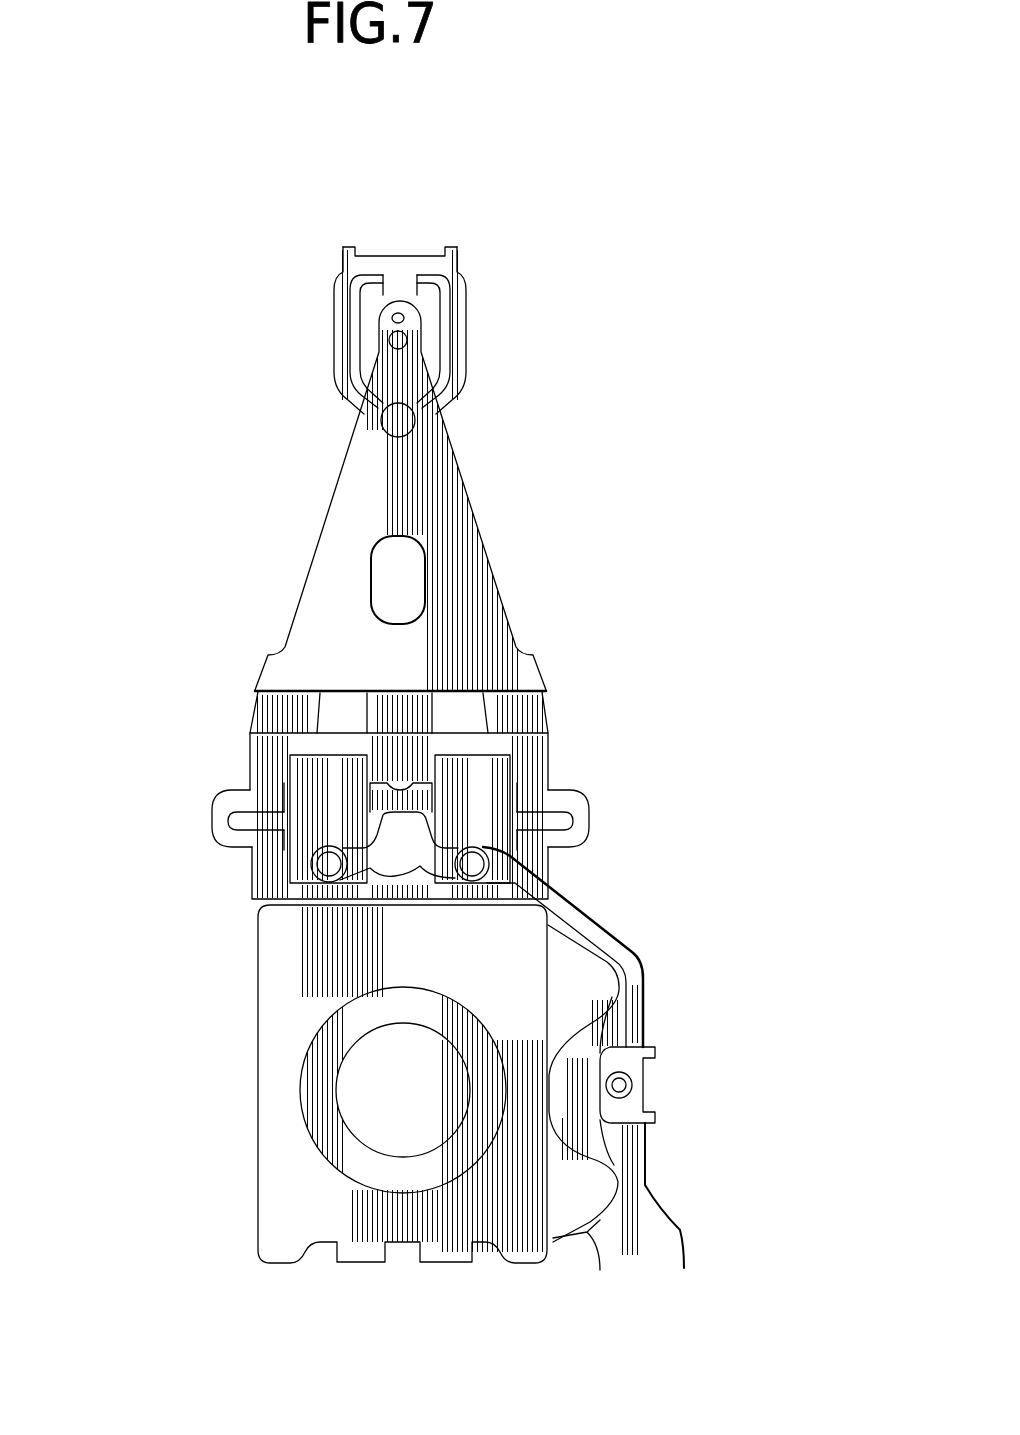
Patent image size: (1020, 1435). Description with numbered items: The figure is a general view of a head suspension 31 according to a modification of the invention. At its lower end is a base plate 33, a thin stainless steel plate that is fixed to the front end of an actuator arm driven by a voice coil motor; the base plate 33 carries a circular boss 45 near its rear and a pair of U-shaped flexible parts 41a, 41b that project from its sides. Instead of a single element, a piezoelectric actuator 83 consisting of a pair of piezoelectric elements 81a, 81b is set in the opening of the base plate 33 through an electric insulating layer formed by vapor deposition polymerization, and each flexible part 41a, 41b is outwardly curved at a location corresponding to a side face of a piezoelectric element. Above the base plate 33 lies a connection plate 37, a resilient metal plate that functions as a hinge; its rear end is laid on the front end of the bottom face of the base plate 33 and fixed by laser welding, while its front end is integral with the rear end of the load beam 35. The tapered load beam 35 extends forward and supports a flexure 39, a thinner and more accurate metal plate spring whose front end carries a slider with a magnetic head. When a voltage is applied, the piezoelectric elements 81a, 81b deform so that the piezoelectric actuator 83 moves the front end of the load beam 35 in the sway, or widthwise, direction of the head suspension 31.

The head suspension 31 is at (551, 239).
The base plate 33 is at (287, 1050).
The load beam 35 is at (455, 568).
The connection plate 37 is at (492, 686).
The flexure 39 is at (458, 333).
The flexible part 41a is at (217, 823).
The flexible part 41b is at (600, 822).
The circular boss 45 is at (333, 1127).
The piezoelectric element 81a is at (330, 820).
The piezoelectric element 81b is at (473, 803).
The piezoelectric actuator 83 is at (703, 638).